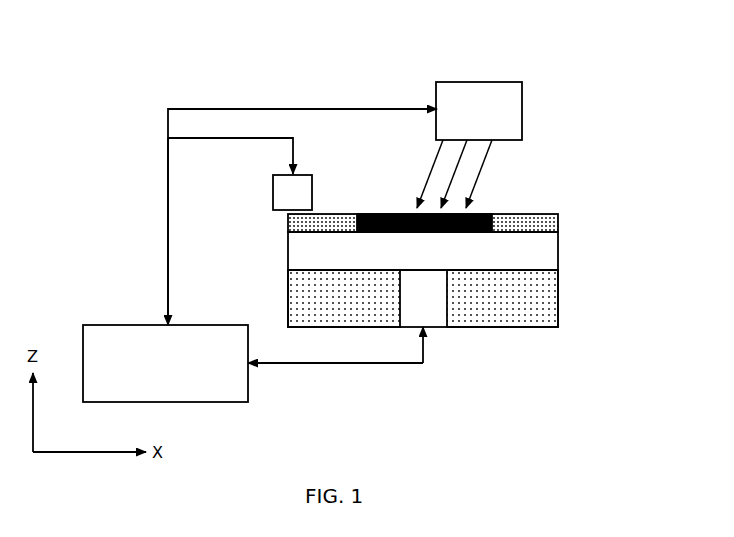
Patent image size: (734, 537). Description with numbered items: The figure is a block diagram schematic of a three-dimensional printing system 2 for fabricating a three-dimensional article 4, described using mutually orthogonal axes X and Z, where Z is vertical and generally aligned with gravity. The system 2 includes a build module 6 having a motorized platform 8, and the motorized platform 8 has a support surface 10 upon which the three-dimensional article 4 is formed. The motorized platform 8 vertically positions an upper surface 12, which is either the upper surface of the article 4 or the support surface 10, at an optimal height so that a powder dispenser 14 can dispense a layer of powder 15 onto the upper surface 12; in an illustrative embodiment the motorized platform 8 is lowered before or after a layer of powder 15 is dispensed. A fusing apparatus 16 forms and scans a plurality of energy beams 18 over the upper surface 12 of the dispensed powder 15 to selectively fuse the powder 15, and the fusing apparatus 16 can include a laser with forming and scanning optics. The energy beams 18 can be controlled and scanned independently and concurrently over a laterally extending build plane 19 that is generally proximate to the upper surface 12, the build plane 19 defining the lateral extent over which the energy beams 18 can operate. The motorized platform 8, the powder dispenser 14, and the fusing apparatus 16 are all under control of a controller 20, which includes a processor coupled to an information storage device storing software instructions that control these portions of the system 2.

The three-dimensional printing system 2 is at (370, 80).
The three-dimensional article 4 is at (385, 216).
The build module 6 is at (558, 296).
The motorized platform 8 is at (542, 248).
The support surface 10 is at (444, 172).
The upper surface 12 is at (546, 172).
The build plane 19 is at (508, 215).
The powder dispenser 14 is at (273, 192).
The layer of powder 15 is at (333, 222).
The fusing apparatus 16 is at (485, 82).
The energy beams 18 is at (432, 167).
The controller 20 is at (123, 325).